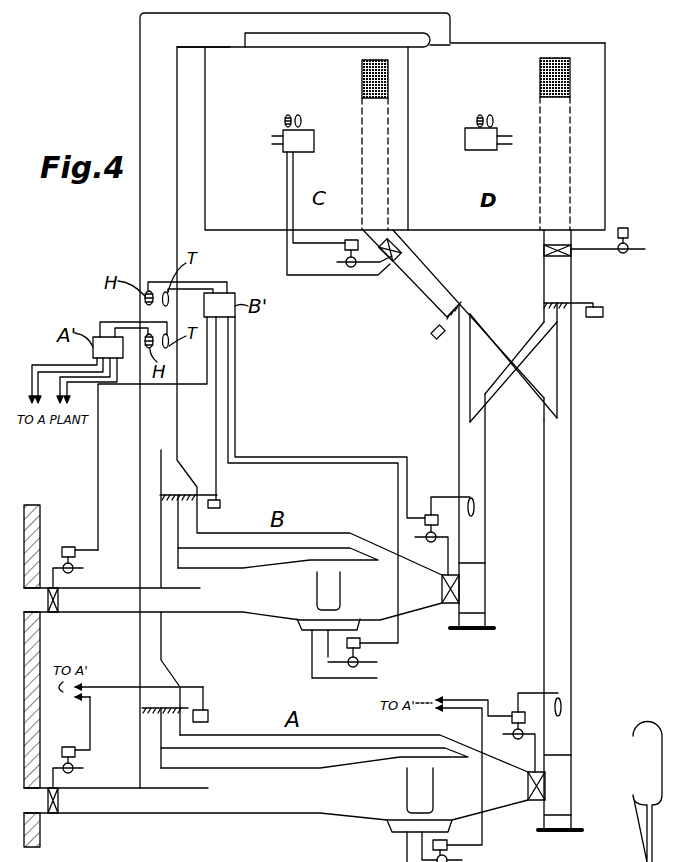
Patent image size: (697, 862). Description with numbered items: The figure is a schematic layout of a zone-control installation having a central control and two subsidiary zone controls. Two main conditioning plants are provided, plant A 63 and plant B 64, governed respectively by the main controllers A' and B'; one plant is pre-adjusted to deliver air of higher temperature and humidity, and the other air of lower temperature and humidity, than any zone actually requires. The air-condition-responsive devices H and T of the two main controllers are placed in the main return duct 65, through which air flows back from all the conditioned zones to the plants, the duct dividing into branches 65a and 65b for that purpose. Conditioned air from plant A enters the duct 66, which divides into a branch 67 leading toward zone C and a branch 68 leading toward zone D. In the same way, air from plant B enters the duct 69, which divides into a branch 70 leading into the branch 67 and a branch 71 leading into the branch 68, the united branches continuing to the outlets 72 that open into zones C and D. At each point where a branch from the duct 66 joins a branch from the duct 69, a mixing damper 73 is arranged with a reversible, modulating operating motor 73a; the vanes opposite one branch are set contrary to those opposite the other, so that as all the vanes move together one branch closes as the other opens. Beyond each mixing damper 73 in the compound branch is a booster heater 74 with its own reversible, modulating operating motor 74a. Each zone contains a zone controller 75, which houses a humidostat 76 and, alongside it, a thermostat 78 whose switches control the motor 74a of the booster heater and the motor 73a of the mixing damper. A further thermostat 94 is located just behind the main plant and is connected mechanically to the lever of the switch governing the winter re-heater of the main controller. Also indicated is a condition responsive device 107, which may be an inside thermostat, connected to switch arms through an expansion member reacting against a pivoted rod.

The main conditioning plant A 63 is at (247, 587).
The main conditioning plant B 64 is at (292, 777).
The main return duct 65 is at (143, 237).
The branch of main return duct 65a is at (160, 650).
The branch of main return duct 65b is at (161, 448).
The duct 66 is at (571, 616).
The branch 67 is at (503, 345).
The branch 68 is at (571, 377).
The duct 69 is at (478, 546).
The branch 70 is at (459, 386).
The branch 71 is at (497, 382).
The outlets 72 is at (362, 78).
The mixing damper 73 is at (557, 303).
The operating motor of mixing damper 73a is at (603, 309).
The booster heater 74 is at (401, 254).
The operating motor of booster heater 74a is at (345, 249).
The zone controller 75 is at (283, 146).
The humidostat 76 is at (287, 115).
The thermostat 78 is at (301, 118).
The thermostat 94 is at (476, 512).
The condition responsive device 107 is at (662, 744).